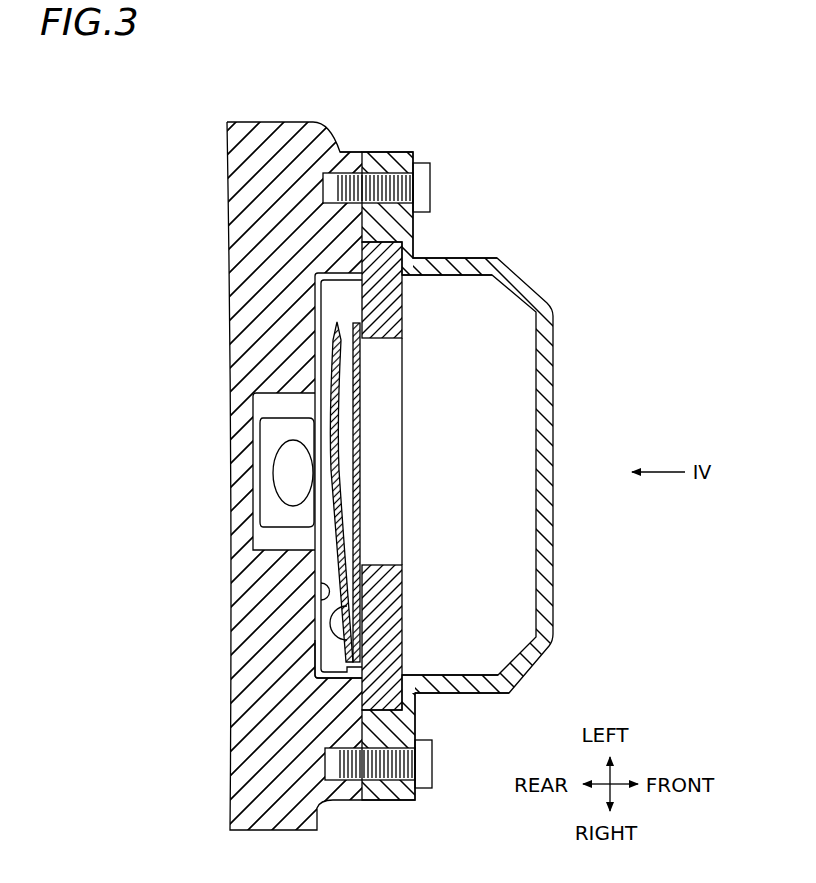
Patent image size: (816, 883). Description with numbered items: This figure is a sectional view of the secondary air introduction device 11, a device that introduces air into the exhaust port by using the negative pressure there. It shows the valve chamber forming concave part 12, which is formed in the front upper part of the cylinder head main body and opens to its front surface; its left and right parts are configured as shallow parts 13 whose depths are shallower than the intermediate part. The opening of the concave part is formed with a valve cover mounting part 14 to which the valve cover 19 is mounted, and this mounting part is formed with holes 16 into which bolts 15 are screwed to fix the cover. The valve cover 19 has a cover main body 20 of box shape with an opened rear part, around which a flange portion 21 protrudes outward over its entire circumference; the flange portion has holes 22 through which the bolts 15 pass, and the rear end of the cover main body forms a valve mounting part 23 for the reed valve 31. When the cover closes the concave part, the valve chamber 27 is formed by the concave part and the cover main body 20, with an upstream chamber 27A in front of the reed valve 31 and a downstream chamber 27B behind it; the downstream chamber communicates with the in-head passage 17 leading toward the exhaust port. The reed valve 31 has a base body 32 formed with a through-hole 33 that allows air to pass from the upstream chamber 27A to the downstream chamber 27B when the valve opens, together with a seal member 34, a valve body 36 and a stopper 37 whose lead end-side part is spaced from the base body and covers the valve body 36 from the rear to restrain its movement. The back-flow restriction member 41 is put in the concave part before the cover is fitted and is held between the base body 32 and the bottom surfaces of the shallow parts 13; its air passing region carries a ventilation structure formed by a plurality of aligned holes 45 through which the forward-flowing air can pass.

The secondary air introduction device 11 is at (490, 98).
The valve chamber forming concave part 12 is at (325, 592).
The shallow parts 13 is at (309, 371).
The valve cover mounting part 14 is at (345, 158).
The bolts 15 is at (431, 180).
The holes 16 is at (343, 778).
The in-head passage 17 is at (300, 456).
The valve cover 19 is at (558, 289).
The cover main body 20 is at (553, 342).
The flange portion 21 is at (383, 156).
The holes 22 is at (420, 782).
The valve mounting part 23 is at (397, 700).
The valve chamber 27 is at (517, 426).
The upstream chamber 27A is at (507, 500).
The downstream chamber 27B is at (333, 538).
The reed valve 31 is at (408, 309).
The base body 32 is at (399, 243).
The through-hole 33 is at (383, 565).
The seal member 34 is at (315, 276).
The valve body 36 is at (340, 325).
The stopper 37 is at (355, 330).
The back-flow restriction member 41 is at (308, 669).
The holes 45 is at (315, 626).